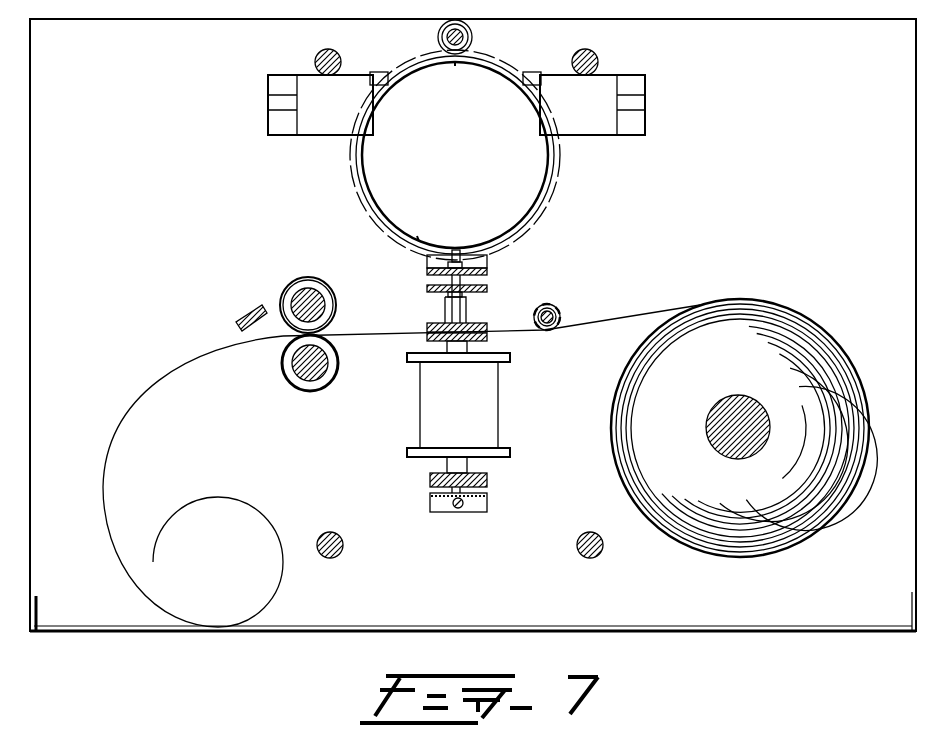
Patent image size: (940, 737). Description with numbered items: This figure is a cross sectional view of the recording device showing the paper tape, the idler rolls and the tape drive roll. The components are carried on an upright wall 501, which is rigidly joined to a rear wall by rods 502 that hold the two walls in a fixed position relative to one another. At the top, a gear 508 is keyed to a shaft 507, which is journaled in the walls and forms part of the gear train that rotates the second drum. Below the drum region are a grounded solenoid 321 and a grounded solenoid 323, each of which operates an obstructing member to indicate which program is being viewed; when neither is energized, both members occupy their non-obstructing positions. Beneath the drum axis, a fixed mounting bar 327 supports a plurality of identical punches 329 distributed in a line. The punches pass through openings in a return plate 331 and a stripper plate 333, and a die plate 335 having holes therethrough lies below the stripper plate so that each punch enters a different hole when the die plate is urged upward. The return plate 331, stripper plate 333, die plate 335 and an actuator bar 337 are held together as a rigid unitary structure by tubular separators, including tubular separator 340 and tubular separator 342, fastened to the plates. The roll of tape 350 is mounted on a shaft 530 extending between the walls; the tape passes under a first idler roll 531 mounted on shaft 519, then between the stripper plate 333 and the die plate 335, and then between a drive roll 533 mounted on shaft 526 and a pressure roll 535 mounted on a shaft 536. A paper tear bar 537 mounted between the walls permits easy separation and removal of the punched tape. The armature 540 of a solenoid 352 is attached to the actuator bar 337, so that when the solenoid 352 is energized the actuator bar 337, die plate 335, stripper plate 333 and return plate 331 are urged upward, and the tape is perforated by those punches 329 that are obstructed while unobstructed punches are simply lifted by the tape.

The wall 501 is at (640, 240).
The rods 502 is at (320, 50).
The shaft 507 is at (466, 45).
The gear 508 is at (440, 46).
The grounded solenoid 321 is at (584, 103).
The grounded solenoid 323 is at (328, 103).
The fixed mounting bar 327 is at (489, 268).
The punches 329 is at (470, 266).
The return plate 331 is at (489, 289).
The stripper plate 333 is at (487, 327).
The die plate 335 is at (489, 340).
The actuator bar 337 is at (487, 479).
The tubular separator 340 is at (445, 308).
The tubular separator 342 is at (447, 347).
The roll of tape 350 is at (780, 309).
The solenoid 352 is at (498, 400).
The shaft 519 is at (543, 305).
The shaft 526 is at (316, 296).
The shaft 530 is at (718, 422).
The first idler roll 531 is at (560, 319).
The drive roll 533 is at (336, 302).
The pressure roll 535 is at (316, 391).
The shaft 536 is at (330, 370).
The paper tear bar 537 is at (248, 316).
The armature 540 is at (447, 468).